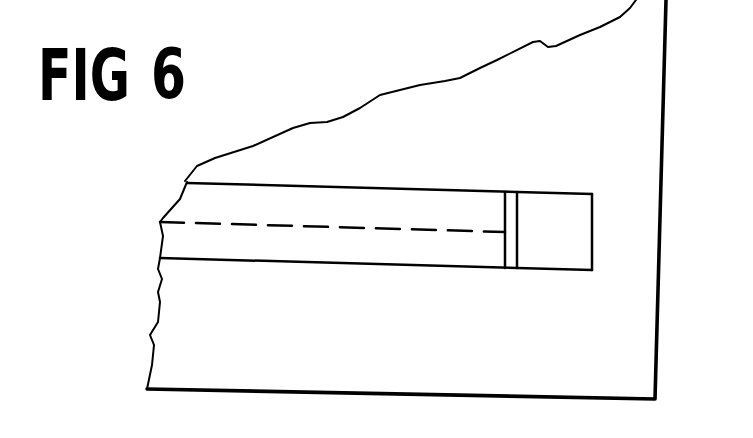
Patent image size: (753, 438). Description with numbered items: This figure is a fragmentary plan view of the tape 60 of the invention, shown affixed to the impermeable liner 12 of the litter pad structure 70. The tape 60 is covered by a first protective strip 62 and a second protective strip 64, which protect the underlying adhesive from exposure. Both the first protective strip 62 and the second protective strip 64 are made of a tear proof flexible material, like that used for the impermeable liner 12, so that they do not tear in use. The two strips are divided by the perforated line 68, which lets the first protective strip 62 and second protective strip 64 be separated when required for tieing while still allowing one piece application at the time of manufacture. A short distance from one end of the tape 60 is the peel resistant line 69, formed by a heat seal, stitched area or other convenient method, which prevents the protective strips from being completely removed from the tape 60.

The impermeable liner 12 is at (406, 199).
The tape 60 is at (376, 218).
The first protective strip 62 is at (378, 194).
The second protective strip 64 is at (400, 252).
The perforated line 68 is at (413, 228).
The peel resistant line 69 is at (513, 203).
The litter pad structure 70 is at (348, 68).